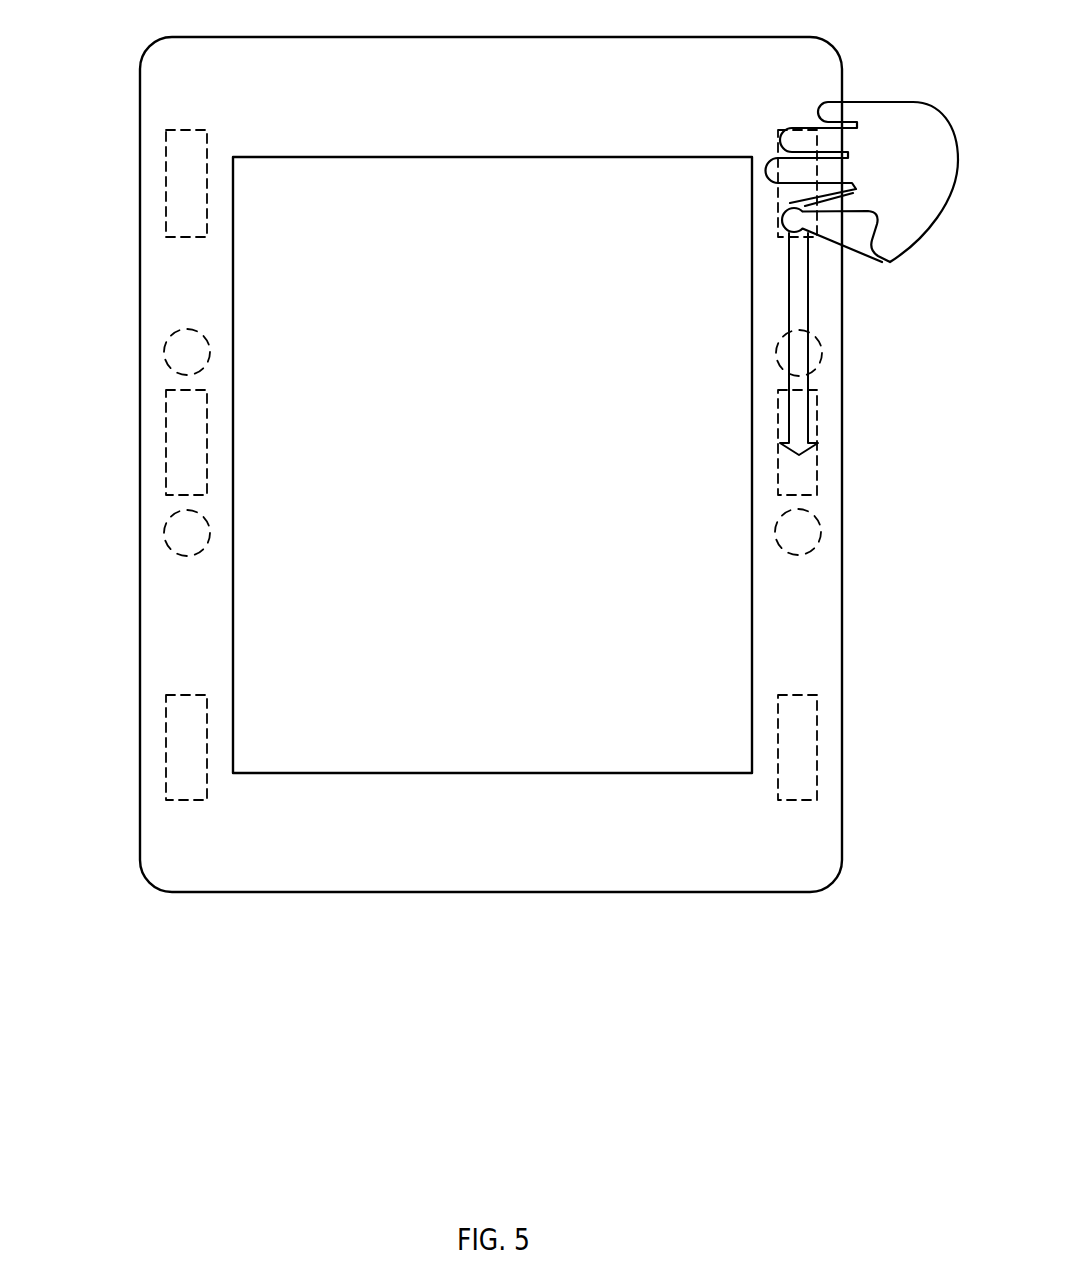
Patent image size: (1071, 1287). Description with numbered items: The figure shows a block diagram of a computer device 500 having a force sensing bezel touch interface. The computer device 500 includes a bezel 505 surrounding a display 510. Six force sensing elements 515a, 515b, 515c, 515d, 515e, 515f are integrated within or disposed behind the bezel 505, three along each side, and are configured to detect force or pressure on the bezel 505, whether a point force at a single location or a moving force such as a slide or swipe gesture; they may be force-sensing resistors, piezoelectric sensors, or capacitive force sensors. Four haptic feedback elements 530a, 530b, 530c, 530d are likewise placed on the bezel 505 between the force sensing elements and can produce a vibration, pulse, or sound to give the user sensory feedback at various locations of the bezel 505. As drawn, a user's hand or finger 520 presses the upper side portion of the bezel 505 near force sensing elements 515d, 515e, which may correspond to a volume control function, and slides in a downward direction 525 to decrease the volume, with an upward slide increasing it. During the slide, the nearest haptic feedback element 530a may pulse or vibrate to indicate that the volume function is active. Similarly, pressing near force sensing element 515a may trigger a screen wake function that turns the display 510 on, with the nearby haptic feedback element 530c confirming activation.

The computer device 500 is at (286, 37).
The bezel 505 is at (140, 331).
The display 510 is at (746, 764).
The force sensing element 515a is at (166, 182).
The force sensing element 515b is at (166, 446).
The force sensing element 515c is at (166, 749).
The force sensing element 515d is at (817, 238).
The force sensing element 515e is at (817, 485).
The force sensing element 515f is at (817, 762).
The finger 520 is at (912, 100).
The downward direction 525 is at (808, 305).
The haptic feedback element 530a is at (820, 358).
The haptic feedback element 530b is at (820, 538).
The haptic feedback element 530c is at (180, 372).
The haptic feedback element 530d is at (180, 553).